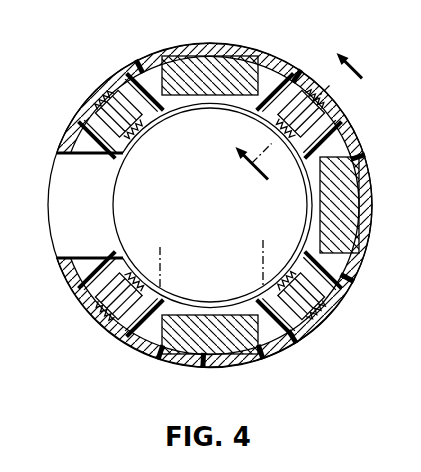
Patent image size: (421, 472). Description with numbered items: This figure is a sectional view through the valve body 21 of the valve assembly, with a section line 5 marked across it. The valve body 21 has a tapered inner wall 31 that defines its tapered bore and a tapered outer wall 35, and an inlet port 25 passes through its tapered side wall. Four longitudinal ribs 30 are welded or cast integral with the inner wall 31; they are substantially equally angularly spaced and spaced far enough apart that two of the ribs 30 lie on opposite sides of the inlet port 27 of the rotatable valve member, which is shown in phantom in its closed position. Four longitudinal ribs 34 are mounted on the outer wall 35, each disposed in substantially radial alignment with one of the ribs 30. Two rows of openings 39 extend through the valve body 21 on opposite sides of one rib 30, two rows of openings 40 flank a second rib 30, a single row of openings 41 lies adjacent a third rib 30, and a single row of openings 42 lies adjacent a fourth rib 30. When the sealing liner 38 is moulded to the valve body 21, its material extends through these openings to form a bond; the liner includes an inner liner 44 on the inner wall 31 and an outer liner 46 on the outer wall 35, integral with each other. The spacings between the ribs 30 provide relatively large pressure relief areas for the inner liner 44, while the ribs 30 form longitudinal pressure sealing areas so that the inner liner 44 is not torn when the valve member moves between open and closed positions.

The line 5— 5 is at (300, 117).
The valve body 21 is at (200, 366).
The inlet port 25 is at (86, 157).
The inlet port 27 is at (263, 254).
The longitudinal ribs 30 is at (283, 124).
The tapered inner wall 31 is at (321, 190).
The longitudinal ribs 34 is at (328, 96).
The tapered outer wall 35 is at (366, 163).
The sealing liner 38 is at (156, 364).
The openings 39 is at (350, 279).
The openings 40 is at (281, 72).
The openings 41 is at (141, 73).
The openings 42 is at (136, 318).
The inner liner 44 is at (204, 315).
The outer liner 46 is at (259, 362).